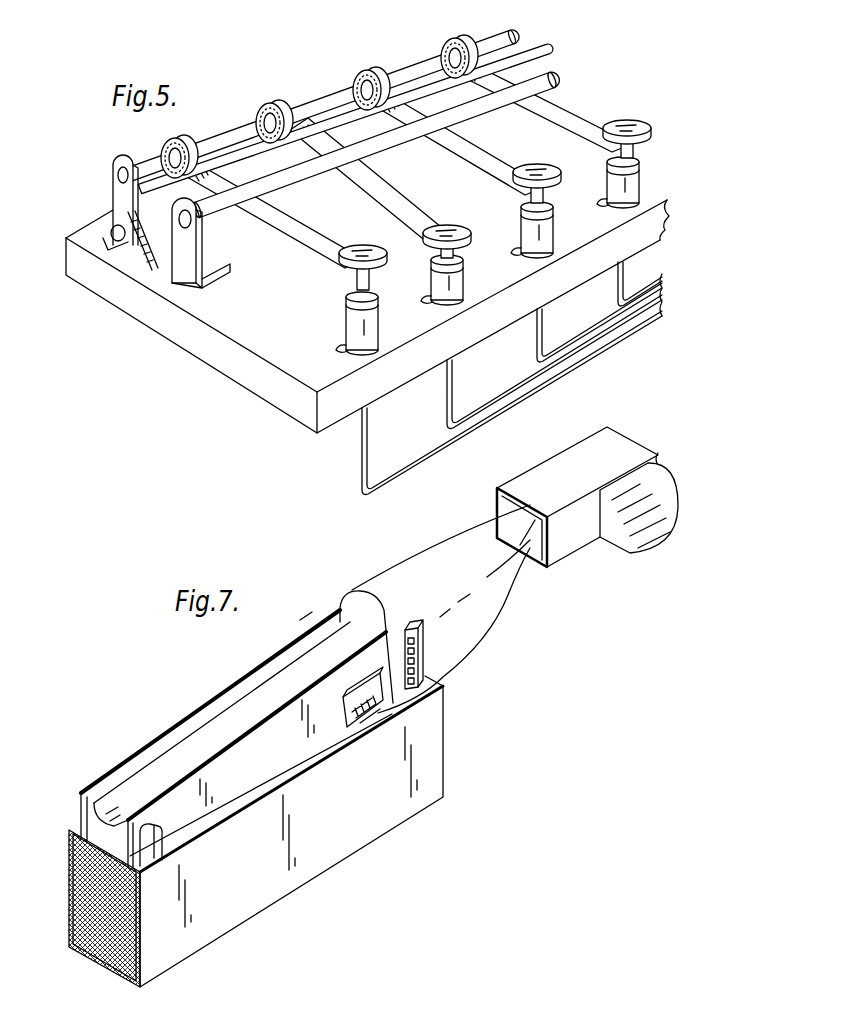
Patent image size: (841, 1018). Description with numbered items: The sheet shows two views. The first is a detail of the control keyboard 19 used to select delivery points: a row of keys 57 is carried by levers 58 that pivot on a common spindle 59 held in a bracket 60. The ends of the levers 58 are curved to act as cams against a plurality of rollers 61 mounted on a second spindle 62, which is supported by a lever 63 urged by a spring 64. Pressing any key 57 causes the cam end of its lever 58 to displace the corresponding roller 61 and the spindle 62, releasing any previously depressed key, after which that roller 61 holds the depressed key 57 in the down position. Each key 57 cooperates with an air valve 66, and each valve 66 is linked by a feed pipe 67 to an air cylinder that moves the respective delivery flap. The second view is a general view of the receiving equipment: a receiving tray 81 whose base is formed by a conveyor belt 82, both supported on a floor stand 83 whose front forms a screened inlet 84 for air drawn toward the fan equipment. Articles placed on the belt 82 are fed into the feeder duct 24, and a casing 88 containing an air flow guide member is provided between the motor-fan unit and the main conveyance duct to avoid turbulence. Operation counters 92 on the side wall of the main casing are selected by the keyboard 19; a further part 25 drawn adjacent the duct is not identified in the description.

In FIG. 5, the keyboard 19 is at (203, 367).
In FIG. 7, the keyboard 19 is at (347, 718).
In FIG. 7, the feeder duct 24 is at (445, 680).
In FIG. 7, the end cap 25 is at (615, 540).
In FIG. 5, the key 57 is at (370, 246).
In FIG. 5, the lever 58 is at (305, 254).
In FIG. 5, the common spindle 59 is at (226, 210).
In FIG. 5, the bracket 60 is at (203, 290).
In FIG. 5, the roller 61 is at (256, 110).
In FIG. 5, the spindle 62 is at (318, 95).
In FIG. 5, the lever 63 is at (115, 196).
In FIG. 5, the spring 64 is at (114, 234).
In FIG. 5, the air valve 66 is at (345, 324).
In FIG. 5, the feed pipe 67 is at (657, 320).
In FIG. 7, the receiving tray 81 is at (176, 735).
In FIG. 7, the conveyor belt 82 is at (148, 778).
In FIG. 7, the floor stand 83 is at (213, 935).
In FIG. 7, the screened inlet 84 is at (138, 947).
In FIG. 7, the casing 88 is at (373, 580).
In FIG. 7, the operation counter 92 is at (425, 653).